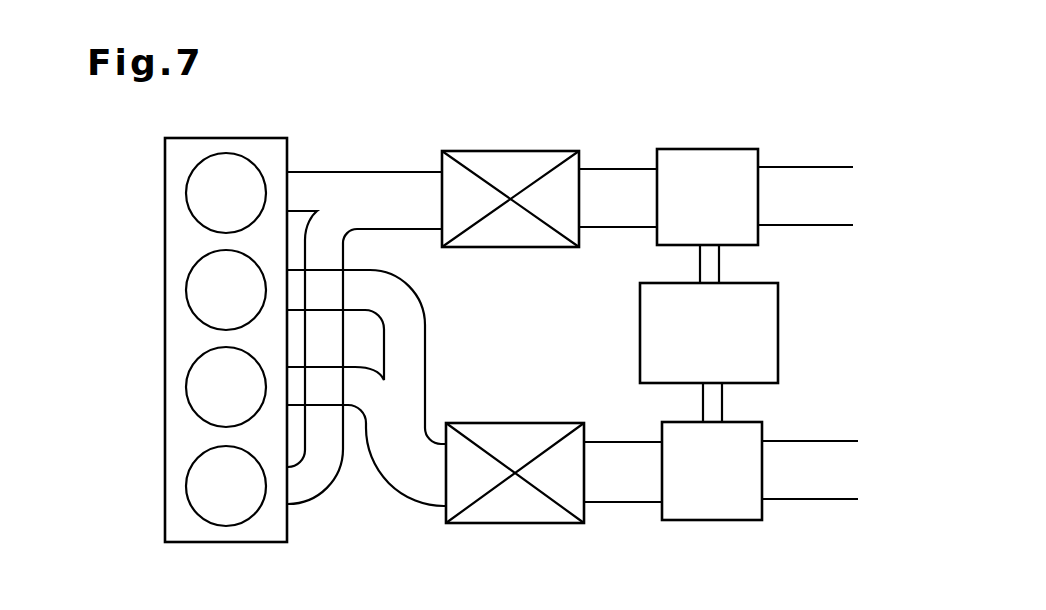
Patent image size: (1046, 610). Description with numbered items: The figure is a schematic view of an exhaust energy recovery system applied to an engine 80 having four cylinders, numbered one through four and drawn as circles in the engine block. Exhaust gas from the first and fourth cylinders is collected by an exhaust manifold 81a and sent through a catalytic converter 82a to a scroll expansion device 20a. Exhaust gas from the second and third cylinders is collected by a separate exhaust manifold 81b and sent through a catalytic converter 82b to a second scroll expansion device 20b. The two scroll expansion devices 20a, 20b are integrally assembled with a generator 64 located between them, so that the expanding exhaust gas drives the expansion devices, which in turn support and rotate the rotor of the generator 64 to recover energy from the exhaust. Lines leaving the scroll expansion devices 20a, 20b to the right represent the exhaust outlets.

The engine 80 is at (252, 542).
The exhaust manifold 81a is at (357, 172).
The exhaust manifold 81b is at (370, 453).
The catalytic converter 82a is at (512, 247).
The catalytic converter 82b is at (515, 523).
The scroll expansion device 20a is at (758, 150).
The scroll expansion device 20b is at (762, 520).
The generator 64 is at (640, 350).